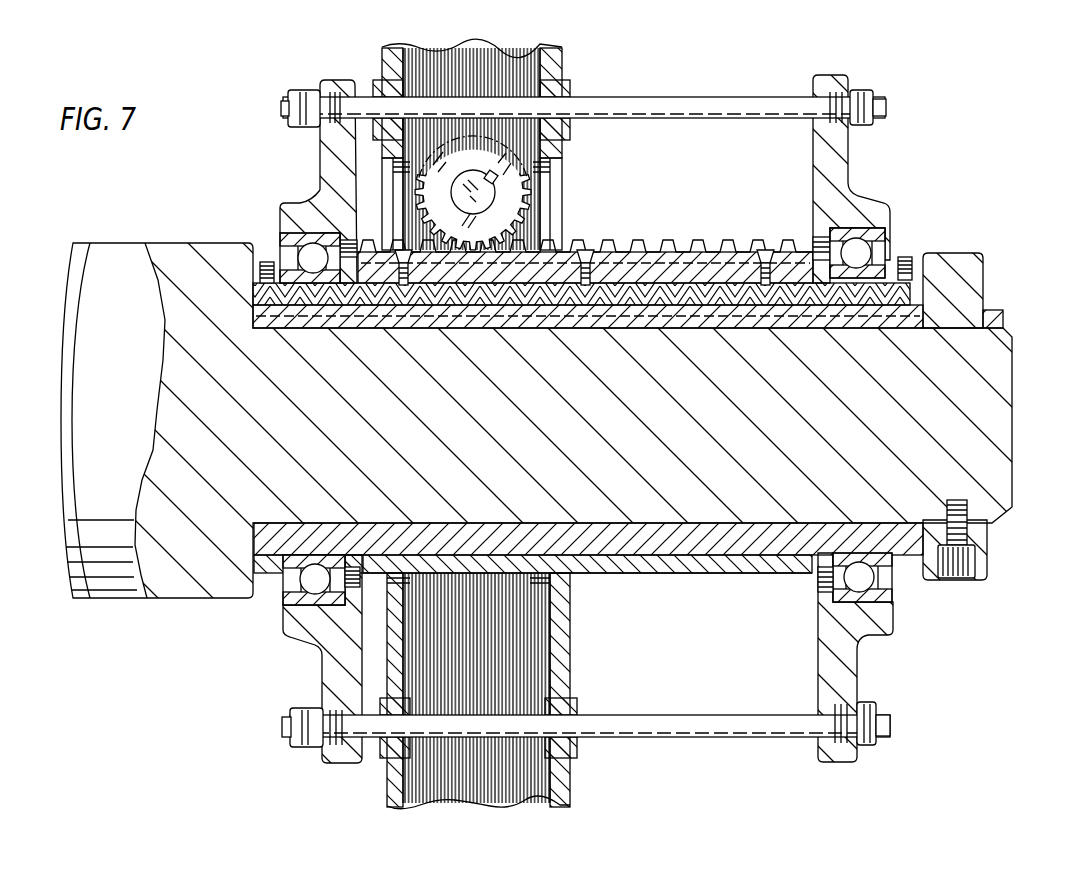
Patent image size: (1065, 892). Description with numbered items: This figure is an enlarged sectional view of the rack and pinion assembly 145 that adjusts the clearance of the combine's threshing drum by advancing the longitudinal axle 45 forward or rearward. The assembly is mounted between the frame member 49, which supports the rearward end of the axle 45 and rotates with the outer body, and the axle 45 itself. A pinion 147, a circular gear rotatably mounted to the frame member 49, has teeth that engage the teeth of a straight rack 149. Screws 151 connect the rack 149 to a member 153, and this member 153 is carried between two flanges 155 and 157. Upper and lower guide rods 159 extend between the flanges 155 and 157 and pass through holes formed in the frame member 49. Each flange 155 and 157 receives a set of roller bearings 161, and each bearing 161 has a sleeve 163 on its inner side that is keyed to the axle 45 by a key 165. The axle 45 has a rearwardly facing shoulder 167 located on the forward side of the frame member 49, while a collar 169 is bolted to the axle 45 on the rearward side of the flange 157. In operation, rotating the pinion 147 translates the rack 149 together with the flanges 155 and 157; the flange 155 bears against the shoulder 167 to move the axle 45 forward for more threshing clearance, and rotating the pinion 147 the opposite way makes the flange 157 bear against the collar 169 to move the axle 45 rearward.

The longitudinal axle 45 is at (123, 243).
The frame member 49 is at (562, 72).
The rack and pinion assembly 145 is at (977, 204).
The pinion 147 is at (530, 200).
The straight rack 149 is at (597, 252).
The screws 151 is at (747, 265).
The member 153 is at (653, 277).
The flange 155 is at (303, 202).
The flange 157 is at (853, 185).
The guide rods 159 is at (782, 96).
The roller bearings 161 is at (285, 230).
The sleeve 163 is at (293, 268).
The key 165 is at (275, 303).
The shoulder 167 is at (257, 580).
The collar 169 is at (987, 560).